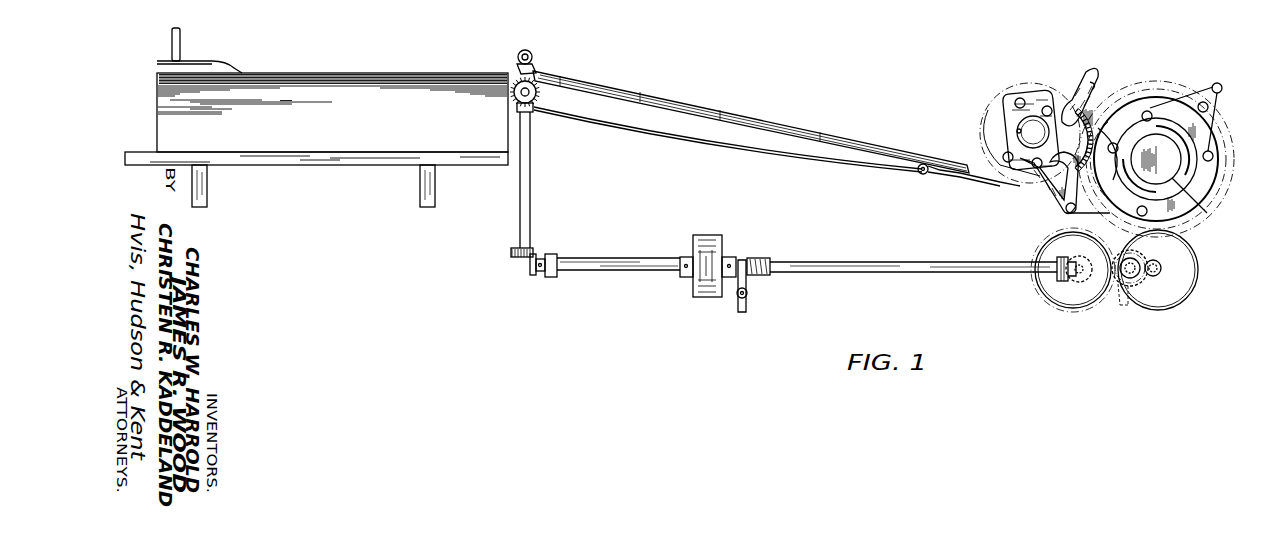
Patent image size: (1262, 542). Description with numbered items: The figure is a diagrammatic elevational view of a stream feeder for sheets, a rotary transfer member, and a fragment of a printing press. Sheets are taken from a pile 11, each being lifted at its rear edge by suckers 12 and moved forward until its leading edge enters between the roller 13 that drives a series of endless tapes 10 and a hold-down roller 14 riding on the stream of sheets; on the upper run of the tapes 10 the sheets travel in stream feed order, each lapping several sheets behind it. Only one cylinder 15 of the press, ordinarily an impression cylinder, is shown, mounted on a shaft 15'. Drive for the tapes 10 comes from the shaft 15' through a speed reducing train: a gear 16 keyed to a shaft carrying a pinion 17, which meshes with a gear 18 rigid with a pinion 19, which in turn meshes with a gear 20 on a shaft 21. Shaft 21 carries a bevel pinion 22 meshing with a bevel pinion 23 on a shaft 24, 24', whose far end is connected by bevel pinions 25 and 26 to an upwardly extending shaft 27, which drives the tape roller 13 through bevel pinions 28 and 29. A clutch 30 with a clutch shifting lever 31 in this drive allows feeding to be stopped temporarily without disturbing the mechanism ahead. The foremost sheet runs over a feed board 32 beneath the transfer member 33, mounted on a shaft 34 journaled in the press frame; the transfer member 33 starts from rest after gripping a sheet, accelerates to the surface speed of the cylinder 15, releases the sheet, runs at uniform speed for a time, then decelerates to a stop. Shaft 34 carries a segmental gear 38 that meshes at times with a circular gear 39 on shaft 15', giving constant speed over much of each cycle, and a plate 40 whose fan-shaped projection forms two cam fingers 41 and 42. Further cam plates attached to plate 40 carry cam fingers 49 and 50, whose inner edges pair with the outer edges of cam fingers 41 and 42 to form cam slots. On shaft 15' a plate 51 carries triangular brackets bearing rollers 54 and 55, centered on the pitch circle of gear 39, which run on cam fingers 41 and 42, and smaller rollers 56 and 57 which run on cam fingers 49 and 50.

The endless tapes 10 is at (625, 125).
The pile 11 is at (440, 150).
The suckers 12 is at (181, 48).
The roller 13 is at (548, 116).
The hold-down roller 14 is at (516, 58).
The cylinder 15 is at (1168, 159).
The shaft 15' is at (1202, 203).
The gear 16 is at (1183, 301).
The pinion 17 is at (1155, 278).
The gear 18 is at (1118, 284).
The pinion 19 is at (1132, 279).
The gear 20 is at (1060, 310).
The shaft 21 is at (1079, 248).
The bevel pinion 22 is at (1080, 281).
The bevel pinion 23 is at (1050, 280).
The shaft 24 is at (913, 281).
The shaft 24' is at (618, 277).
The bevel pinion 25 is at (532, 275).
The bevel pinion 26 is at (510, 252).
The upwardly extending shaft 27 is at (542, 177).
The bevel pinion 28 is at (510, 104).
The bevel pinion 29 is at (537, 66).
The clutch 30 is at (698, 280).
The clutch shifting lever 31 is at (748, 302).
The feed board 32 is at (985, 180).
The transfer member 33 is at (1010, 102).
The shaft 34 is at (1018, 132).
The segmental gear 38 is at (1078, 90).
The circular gear 39 is at (1100, 100).
The plate 40 is at (998, 150).
The cam finger 41 is at (1130, 178).
The cam finger 42 is at (1120, 96).
The cam finger 49 is at (1048, 198).
The cam finger 50 is at (1098, 72).
The plate 51 is at (1214, 160).
The roller 54 is at (1130, 224).
The roller 55 is at (1226, 92).
The roller 56 is at (1062, 214).
The roller 57 is at (1219, 82).